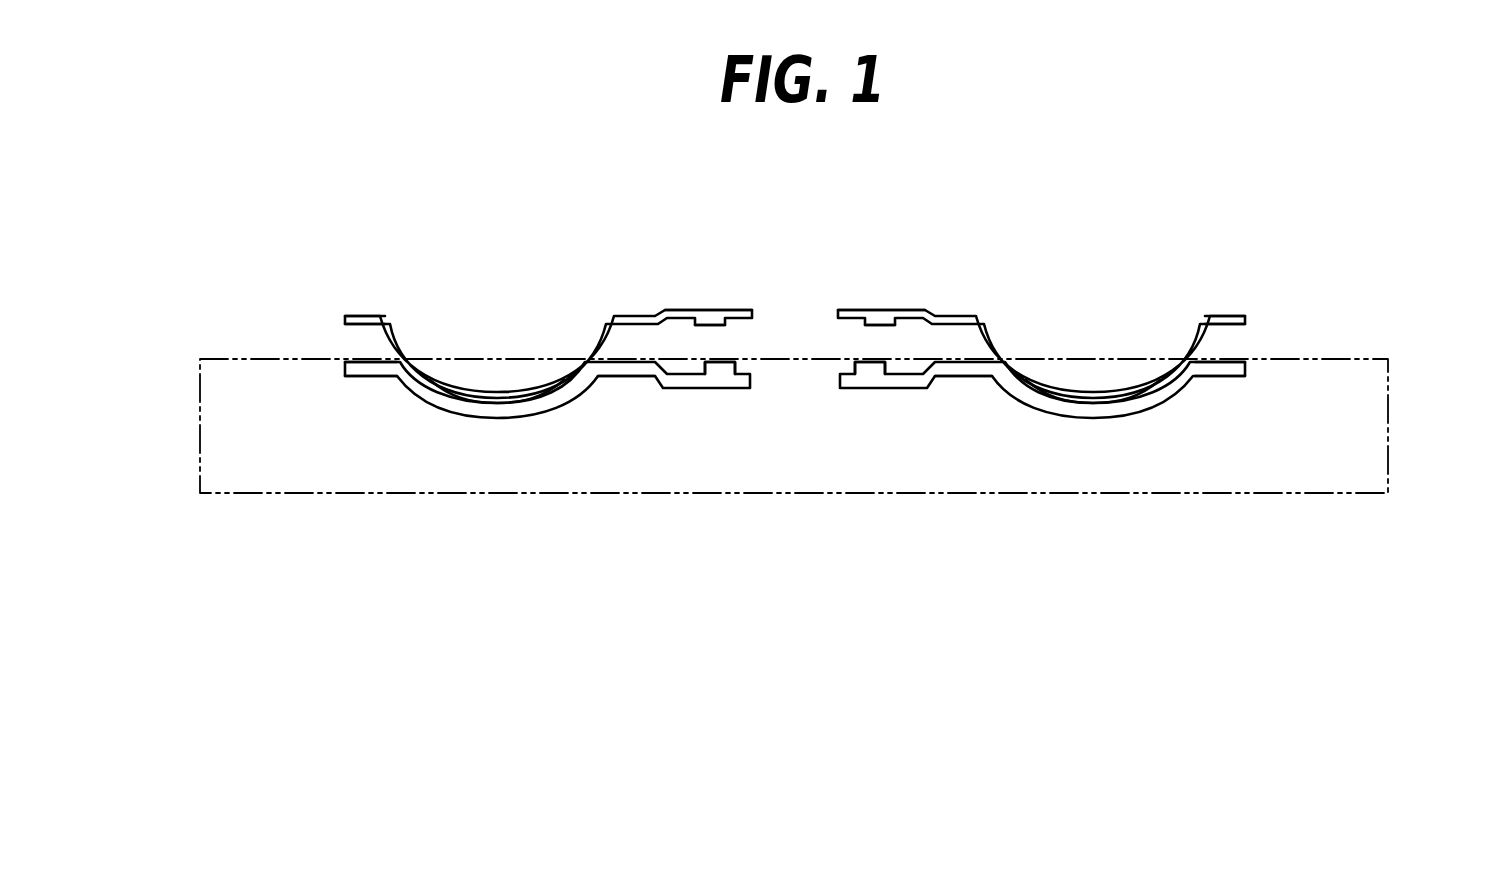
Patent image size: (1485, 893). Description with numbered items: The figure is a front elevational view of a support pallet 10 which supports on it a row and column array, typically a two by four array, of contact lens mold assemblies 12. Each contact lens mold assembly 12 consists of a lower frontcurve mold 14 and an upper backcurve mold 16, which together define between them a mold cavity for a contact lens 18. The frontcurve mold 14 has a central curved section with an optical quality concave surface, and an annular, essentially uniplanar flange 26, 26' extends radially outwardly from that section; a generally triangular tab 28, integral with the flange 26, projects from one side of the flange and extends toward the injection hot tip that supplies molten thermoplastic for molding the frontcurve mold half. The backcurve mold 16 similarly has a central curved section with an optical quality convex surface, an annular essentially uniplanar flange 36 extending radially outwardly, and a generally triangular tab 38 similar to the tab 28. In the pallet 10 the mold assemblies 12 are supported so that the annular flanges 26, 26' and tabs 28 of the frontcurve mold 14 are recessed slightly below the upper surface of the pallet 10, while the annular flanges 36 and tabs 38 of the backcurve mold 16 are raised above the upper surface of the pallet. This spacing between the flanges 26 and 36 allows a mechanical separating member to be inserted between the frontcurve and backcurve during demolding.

The support pallet 10 is at (283, 493).
The contact lens mold assembly 12 is at (794, 335).
The frontcurve mold 14 is at (593, 379).
The backcurve mold 16 is at (398, 340).
The contact lens 18 is at (483, 405).
The annular flange 26 is at (962, 419).
The annular flange 26' is at (329, 380).
The triangular tab 28 is at (867, 389).
The annular flange 36 is at (360, 316).
The triangular tab 38 is at (848, 317).